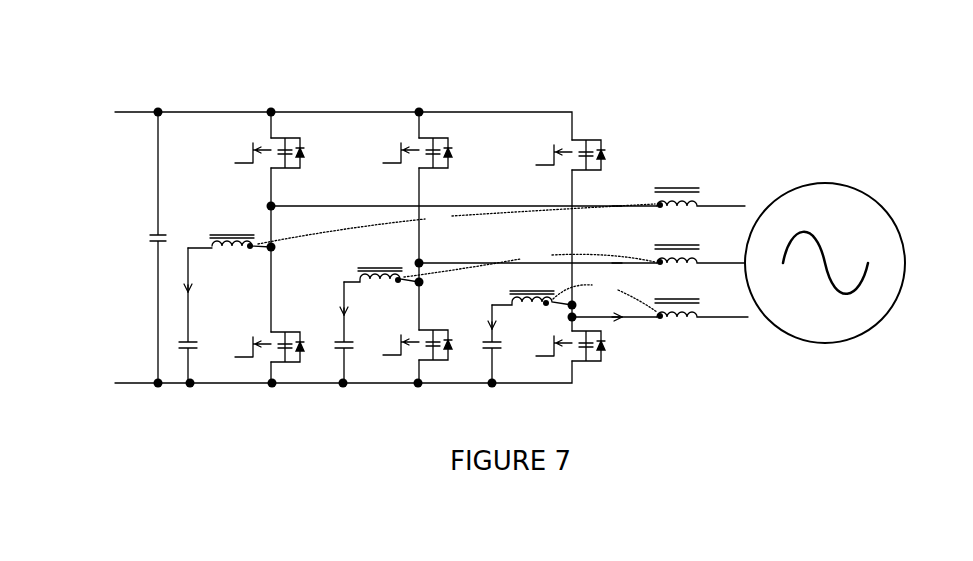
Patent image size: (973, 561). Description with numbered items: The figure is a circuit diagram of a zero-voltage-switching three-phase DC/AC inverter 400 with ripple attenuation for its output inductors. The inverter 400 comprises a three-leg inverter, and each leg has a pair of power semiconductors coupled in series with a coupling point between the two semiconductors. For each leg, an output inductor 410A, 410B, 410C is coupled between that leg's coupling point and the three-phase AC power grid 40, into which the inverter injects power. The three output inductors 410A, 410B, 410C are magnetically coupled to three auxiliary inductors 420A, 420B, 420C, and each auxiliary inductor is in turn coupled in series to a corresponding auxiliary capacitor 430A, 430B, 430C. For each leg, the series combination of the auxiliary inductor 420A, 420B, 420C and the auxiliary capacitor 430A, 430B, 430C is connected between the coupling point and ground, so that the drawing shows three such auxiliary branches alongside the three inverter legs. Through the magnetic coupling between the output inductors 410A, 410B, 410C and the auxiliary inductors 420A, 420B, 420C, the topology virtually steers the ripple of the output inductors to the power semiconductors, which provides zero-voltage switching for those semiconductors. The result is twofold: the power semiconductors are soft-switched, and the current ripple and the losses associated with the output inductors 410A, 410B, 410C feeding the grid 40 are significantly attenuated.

The three-phase DC/AC inverter 400 is at (357, 95).
The three-phase AC power grid 40 is at (873, 187).
The output inductor 410A is at (690, 185).
The output inductor 410B is at (695, 240).
The output inductor 410C is at (700, 330).
The auxiliary inductor 420A is at (203, 218).
The auxiliary inductor 420B is at (352, 270).
The auxiliary inductor 420C is at (508, 294).
The auxiliary capacitor 430A is at (181, 357).
The auxiliary capacitor 430B is at (332, 347).
The auxiliary capacitor 430C is at (481, 349).